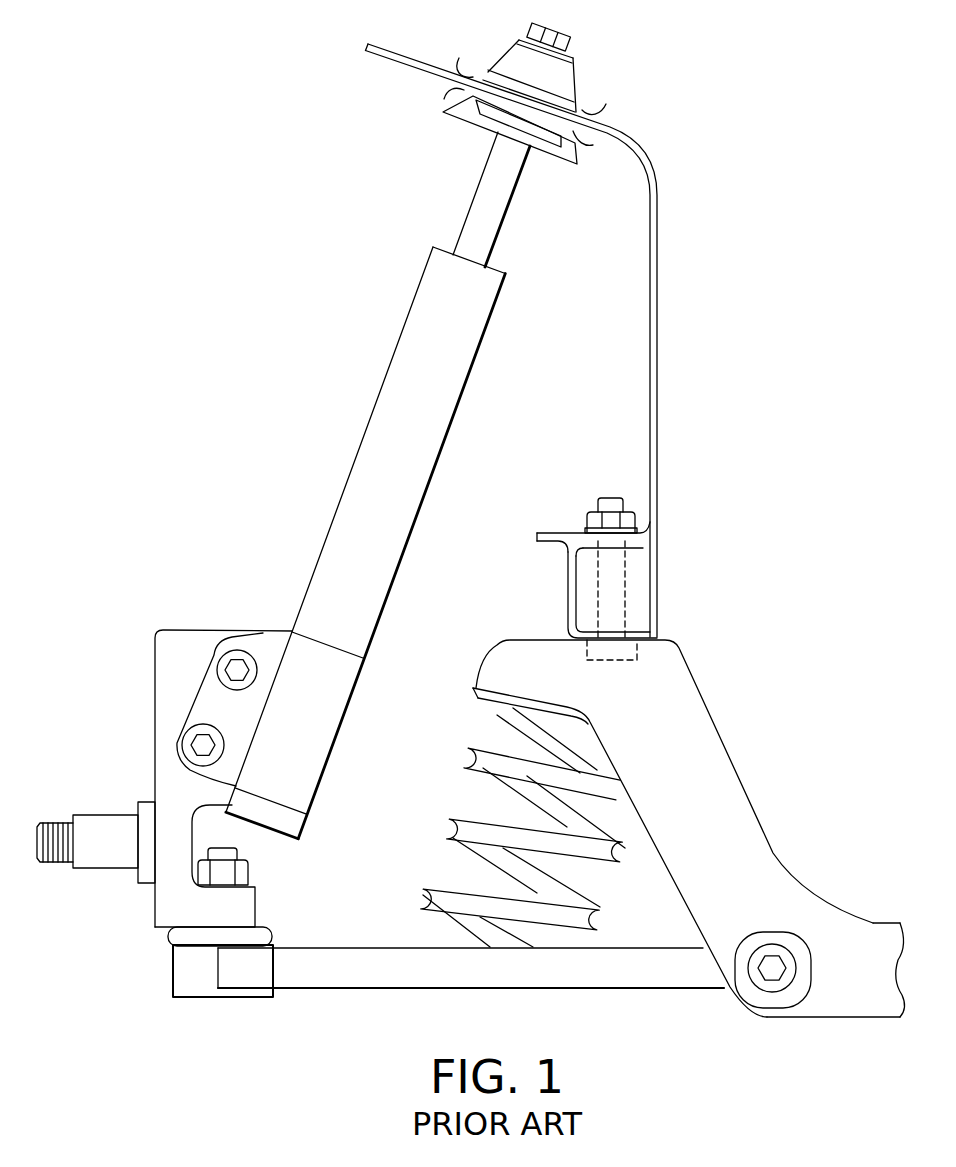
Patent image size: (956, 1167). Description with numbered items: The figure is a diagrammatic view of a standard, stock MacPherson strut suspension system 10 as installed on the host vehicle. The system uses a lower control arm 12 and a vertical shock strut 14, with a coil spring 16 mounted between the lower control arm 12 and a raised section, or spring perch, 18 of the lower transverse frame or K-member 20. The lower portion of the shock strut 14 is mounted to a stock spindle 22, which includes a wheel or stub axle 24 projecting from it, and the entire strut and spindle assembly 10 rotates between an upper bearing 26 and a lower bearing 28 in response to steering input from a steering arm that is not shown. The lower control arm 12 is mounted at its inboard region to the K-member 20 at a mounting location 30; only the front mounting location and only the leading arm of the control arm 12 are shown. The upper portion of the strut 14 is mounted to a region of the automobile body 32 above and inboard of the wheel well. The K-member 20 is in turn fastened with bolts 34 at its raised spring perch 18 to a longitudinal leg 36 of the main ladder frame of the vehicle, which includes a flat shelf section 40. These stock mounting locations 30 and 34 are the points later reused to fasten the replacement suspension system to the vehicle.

The MacPherson strut suspension system 10 is at (317, 406).
The lower control arm 12 is at (577, 989).
The vertical shock strut 14 is at (347, 483).
The spring 16 is at (452, 812).
The raised section (spring perch) 18 is at (702, 692).
The lower transverse frame (K-member) 20 is at (872, 919).
The stock spindle 22 is at (153, 668).
The wheel or stub axle 24 is at (110, 873).
The upper bearing 26 is at (513, 46).
The lower bearing 28 is at (273, 931).
The mounting location 30 is at (772, 953).
The automobile body 32 is at (657, 235).
The bolts 34 is at (582, 662).
The longitudinal leg of main ladder frame 36 is at (642, 578).
The flat shelf section 40 is at (555, 532).